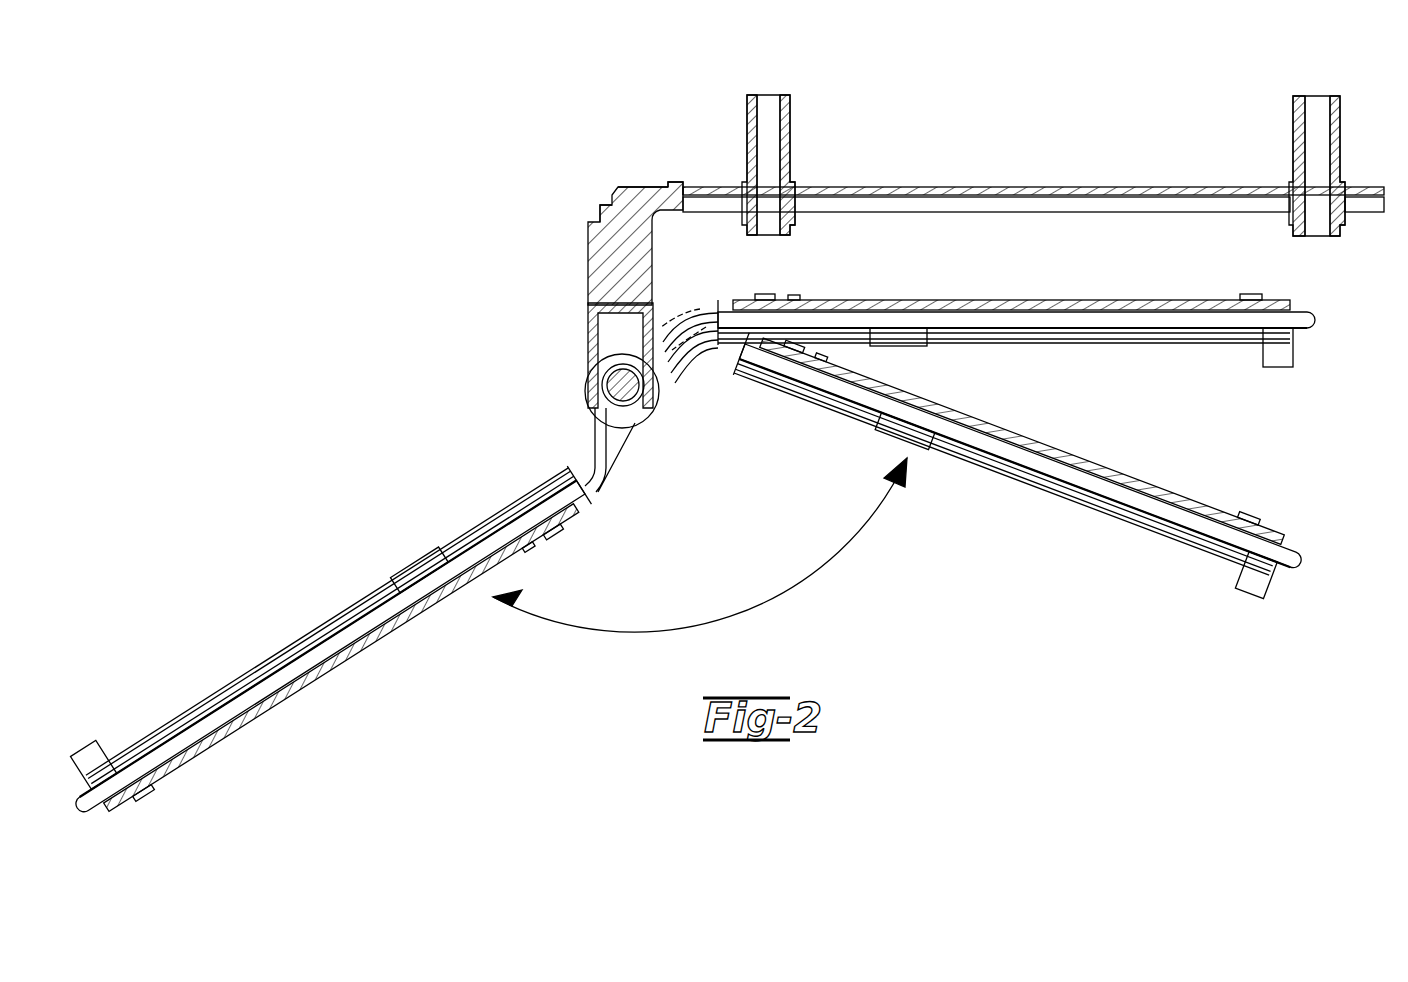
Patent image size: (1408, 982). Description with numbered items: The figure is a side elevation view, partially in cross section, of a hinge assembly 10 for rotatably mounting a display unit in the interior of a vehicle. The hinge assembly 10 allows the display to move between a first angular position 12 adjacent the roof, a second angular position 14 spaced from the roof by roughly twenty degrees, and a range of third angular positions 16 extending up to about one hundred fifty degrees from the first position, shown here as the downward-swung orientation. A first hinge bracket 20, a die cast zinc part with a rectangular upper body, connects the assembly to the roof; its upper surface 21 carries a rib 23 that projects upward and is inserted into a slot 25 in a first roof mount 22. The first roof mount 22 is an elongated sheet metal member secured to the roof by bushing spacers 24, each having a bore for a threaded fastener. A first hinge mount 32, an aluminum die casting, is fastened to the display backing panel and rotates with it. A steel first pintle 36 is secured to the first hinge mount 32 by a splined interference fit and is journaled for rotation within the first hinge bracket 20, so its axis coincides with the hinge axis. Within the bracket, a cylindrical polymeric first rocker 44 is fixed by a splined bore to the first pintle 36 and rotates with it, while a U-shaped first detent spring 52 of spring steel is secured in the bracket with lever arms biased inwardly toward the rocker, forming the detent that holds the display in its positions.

The hinge assembly 10 is at (555, 236).
The first angular position 12 is at (1318, 320).
The second angular position 14 is at (1306, 555).
The range of third angular positions 16 is at (728, 618).
The first hinge bracket 20 is at (590, 285).
The upper surface 21 is at (600, 205).
The first roof mount 22 is at (1060, 186).
The rib 23 is at (678, 182).
The bushing spacers 24 is at (790, 95).
The slot 25 is at (660, 186).
The first hinge mount 32 is at (312, 706).
The first pintle 36 is at (640, 406).
The first rocker 44 is at (592, 382).
The first detent spring 52 is at (590, 328).